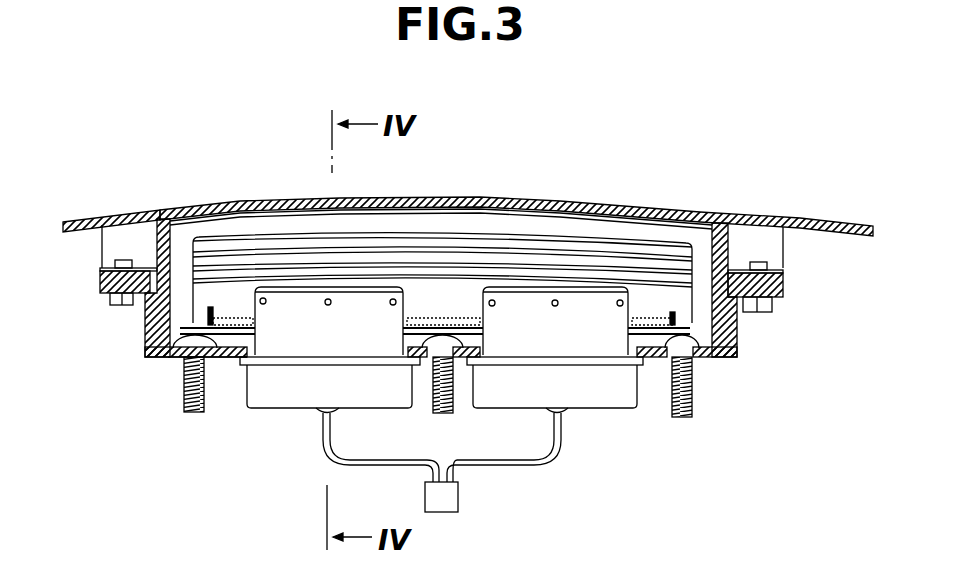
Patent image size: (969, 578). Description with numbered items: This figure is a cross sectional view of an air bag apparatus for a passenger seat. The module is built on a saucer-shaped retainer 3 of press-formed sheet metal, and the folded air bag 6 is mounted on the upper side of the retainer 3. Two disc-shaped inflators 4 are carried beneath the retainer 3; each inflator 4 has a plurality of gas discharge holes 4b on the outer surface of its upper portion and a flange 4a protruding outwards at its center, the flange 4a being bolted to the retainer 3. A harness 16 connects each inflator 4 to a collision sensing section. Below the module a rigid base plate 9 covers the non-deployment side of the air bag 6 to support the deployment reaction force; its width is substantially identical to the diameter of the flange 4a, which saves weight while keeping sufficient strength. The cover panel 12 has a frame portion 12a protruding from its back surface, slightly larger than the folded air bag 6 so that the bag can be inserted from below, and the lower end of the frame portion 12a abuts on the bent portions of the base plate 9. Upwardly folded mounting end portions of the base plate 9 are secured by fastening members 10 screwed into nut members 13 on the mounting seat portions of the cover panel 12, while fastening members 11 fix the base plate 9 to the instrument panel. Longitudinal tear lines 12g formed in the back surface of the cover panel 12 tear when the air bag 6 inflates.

The retainer 3 is at (450, 317).
The inflator 4 is at (284, 398).
The flange 4a is at (240, 360).
The gas discharge holes 4b is at (553, 300).
The air bag 6 is at (262, 253).
The base plate 9 is at (165, 357).
The fastening member 10 is at (122, 306).
The fastening member 11 is at (692, 386).
The cover panel 12 is at (548, 201).
The frame portion 12a is at (155, 354).
The longitudinal tear lines 12g is at (189, 206).
The nut member 13 is at (100, 258).
The harness 16 is at (520, 467).